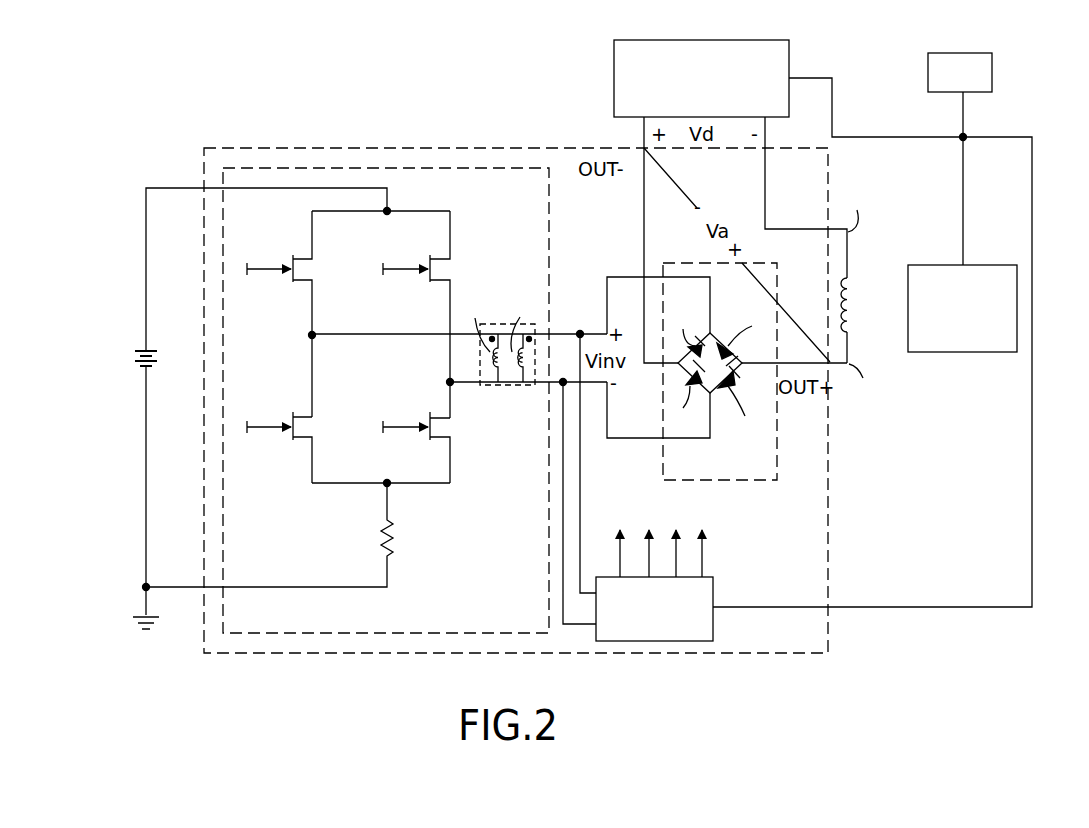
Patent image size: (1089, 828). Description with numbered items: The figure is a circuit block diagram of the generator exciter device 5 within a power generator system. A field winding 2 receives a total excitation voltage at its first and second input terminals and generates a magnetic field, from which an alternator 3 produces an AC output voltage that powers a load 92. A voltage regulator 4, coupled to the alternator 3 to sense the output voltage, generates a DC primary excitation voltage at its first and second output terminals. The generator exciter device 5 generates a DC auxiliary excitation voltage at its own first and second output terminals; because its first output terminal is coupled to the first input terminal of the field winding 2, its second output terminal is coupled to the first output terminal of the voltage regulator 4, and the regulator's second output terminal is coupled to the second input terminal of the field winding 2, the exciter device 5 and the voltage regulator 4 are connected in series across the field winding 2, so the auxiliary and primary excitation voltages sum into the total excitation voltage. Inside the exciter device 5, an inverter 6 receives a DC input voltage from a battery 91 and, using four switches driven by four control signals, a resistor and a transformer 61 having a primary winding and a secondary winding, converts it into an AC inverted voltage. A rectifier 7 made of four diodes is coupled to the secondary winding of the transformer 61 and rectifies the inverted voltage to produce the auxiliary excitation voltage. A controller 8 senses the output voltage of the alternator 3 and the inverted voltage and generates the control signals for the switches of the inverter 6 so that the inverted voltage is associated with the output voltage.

The battery 91 is at (143, 350).
The load 92 is at (992, 72).
The voltage regulator 4 is at (789, 68).
The field winding 2 is at (858, 264).
The alternator 3 is at (980, 352).
The generator exciter device 5 is at (828, 630).
The inverter 6 is at (553, 215).
The transformer 61 is at (520, 388).
The rectifier 7 is at (778, 457).
The controller 8 is at (713, 592).